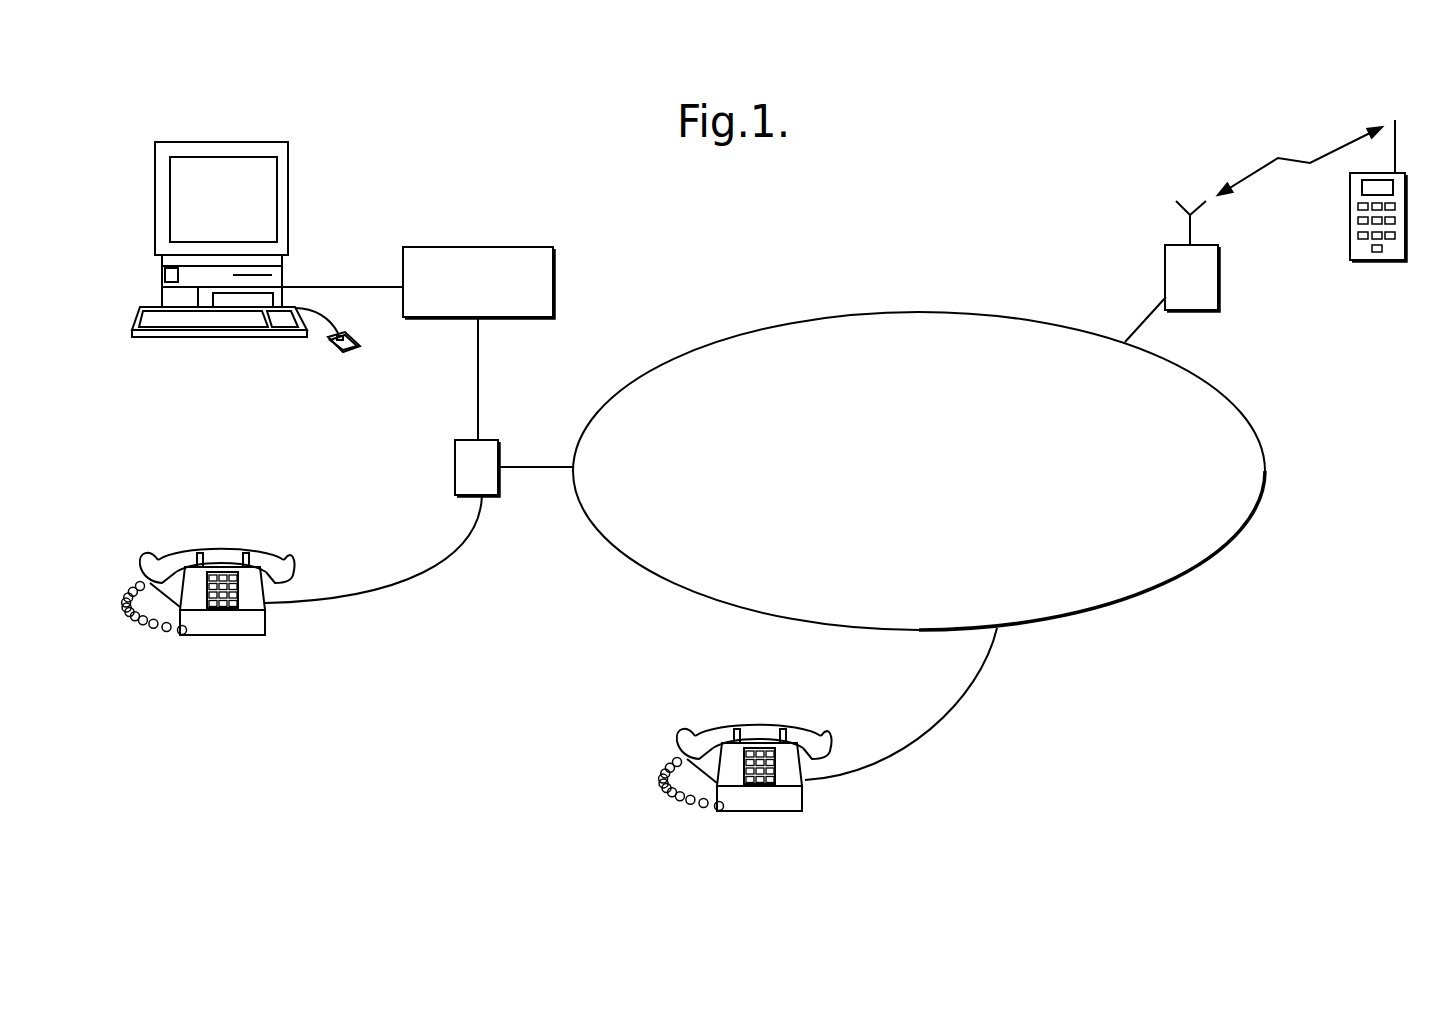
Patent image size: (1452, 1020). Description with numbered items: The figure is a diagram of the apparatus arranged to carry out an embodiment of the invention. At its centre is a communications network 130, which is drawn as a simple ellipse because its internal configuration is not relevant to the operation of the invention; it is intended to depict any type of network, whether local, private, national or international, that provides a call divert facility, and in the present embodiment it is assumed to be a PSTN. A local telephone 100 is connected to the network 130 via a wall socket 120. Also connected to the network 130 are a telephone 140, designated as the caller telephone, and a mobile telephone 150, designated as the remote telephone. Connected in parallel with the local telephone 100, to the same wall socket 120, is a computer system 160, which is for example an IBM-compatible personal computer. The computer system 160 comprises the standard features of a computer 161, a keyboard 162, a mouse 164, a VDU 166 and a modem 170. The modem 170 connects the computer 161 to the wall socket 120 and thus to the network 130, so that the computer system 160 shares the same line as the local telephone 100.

The local telephone 100 is at (218, 637).
The wall socket 120 is at (455, 460).
The communications network 130 is at (832, 312).
The caller telephone 140 is at (765, 812).
The mobile telephone 150 is at (1380, 262).
The computer system 160 is at (350, 180).
The computer 161 is at (162, 292).
The keyboard 162 is at (203, 338).
The mouse 164 is at (354, 350).
The VDU 166 is at (236, 142).
The modem 170 is at (498, 247).